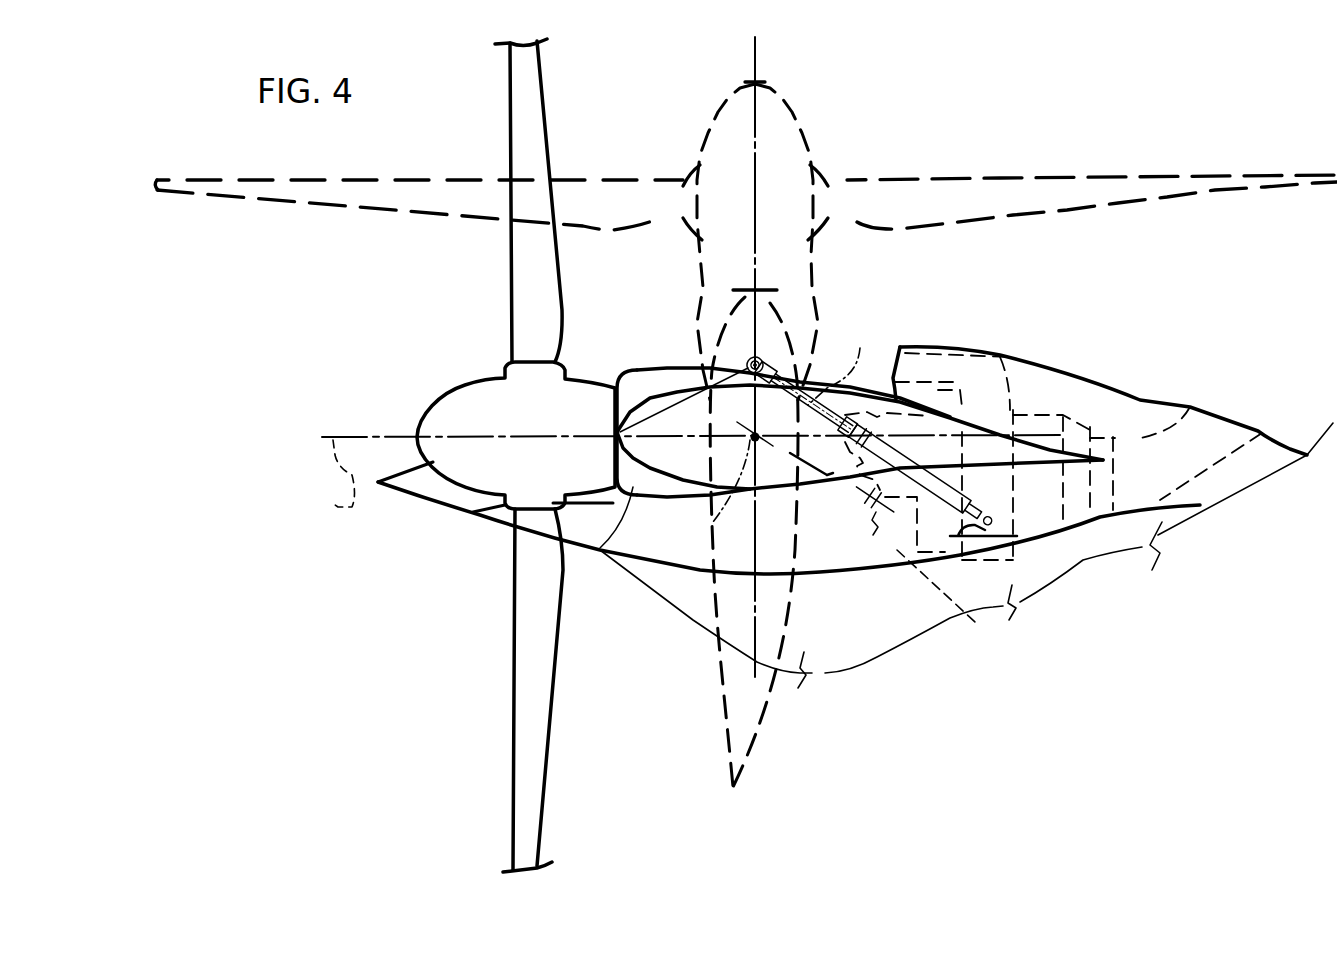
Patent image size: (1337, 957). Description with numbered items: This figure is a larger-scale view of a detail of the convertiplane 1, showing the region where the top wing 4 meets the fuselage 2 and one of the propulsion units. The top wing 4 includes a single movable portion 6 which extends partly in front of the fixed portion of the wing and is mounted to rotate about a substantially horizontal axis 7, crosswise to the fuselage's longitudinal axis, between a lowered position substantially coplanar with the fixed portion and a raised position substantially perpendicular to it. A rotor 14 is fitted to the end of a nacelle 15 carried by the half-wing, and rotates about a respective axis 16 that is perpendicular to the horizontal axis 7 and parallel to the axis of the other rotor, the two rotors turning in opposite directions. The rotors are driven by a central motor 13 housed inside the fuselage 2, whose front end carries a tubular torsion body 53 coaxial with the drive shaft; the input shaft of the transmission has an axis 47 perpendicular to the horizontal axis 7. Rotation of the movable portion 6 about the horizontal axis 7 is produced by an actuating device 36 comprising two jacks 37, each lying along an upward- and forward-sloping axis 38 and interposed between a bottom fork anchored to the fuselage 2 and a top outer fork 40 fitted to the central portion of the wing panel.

The convertiplane 1 is at (1057, 160).
The fuselage 2 is at (1162, 523).
The top wing 4 is at (636, 407).
The movable portion 6 is at (663, 462).
The horizontal axis 7 is at (712, 520).
The central motor 13 is at (975, 622).
The rotor 14 is at (443, 393).
The nacelle 15 is at (600, 548).
The rotor axis 16 is at (330, 503).
The actuating device 36 is at (912, 447).
The jack 37 is at (905, 455).
The jack axis 38 is at (858, 338).
The top outer fork 40 is at (713, 375).
The input shaft axis 47 is at (830, 492).
The tubular torsion body 53 is at (860, 515).